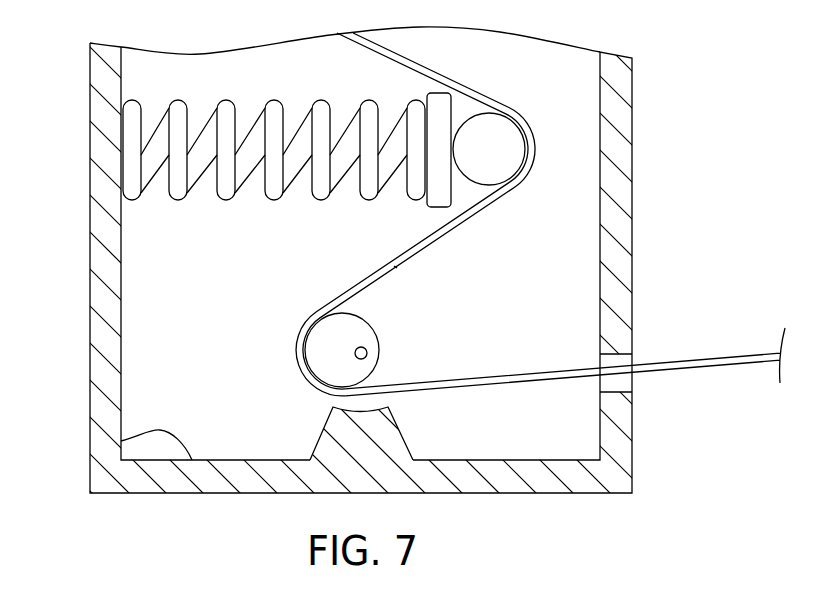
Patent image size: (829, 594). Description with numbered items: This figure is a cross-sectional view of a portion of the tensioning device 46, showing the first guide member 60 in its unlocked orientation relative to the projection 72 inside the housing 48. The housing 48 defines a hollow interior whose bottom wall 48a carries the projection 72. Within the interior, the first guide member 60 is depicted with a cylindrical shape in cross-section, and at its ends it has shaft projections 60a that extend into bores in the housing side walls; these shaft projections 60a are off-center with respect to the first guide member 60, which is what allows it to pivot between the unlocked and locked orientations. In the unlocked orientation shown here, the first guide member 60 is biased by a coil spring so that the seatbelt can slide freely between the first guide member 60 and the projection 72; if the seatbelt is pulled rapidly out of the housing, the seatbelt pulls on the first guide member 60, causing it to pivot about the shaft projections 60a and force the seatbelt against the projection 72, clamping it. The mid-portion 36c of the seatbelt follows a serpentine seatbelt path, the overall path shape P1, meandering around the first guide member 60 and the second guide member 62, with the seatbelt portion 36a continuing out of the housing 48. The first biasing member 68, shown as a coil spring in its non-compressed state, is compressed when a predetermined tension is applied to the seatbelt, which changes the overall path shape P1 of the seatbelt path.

The tensioning device 46 is at (53, 88).
The housing 48 is at (612, 218).
The bottom wall 48a is at (121, 441).
The projection 72 is at (350, 438).
The first biasing member 68 is at (224, 200).
The second guide member 62 is at (497, 145).
The first guide member 60 is at (328, 358).
The shaft projections 60a is at (369, 349).
The mid-portion of the seatbelt 36c is at (451, 232).
The belt segment 36a is at (715, 356).
The overall path shape P1 is at (395, 267).